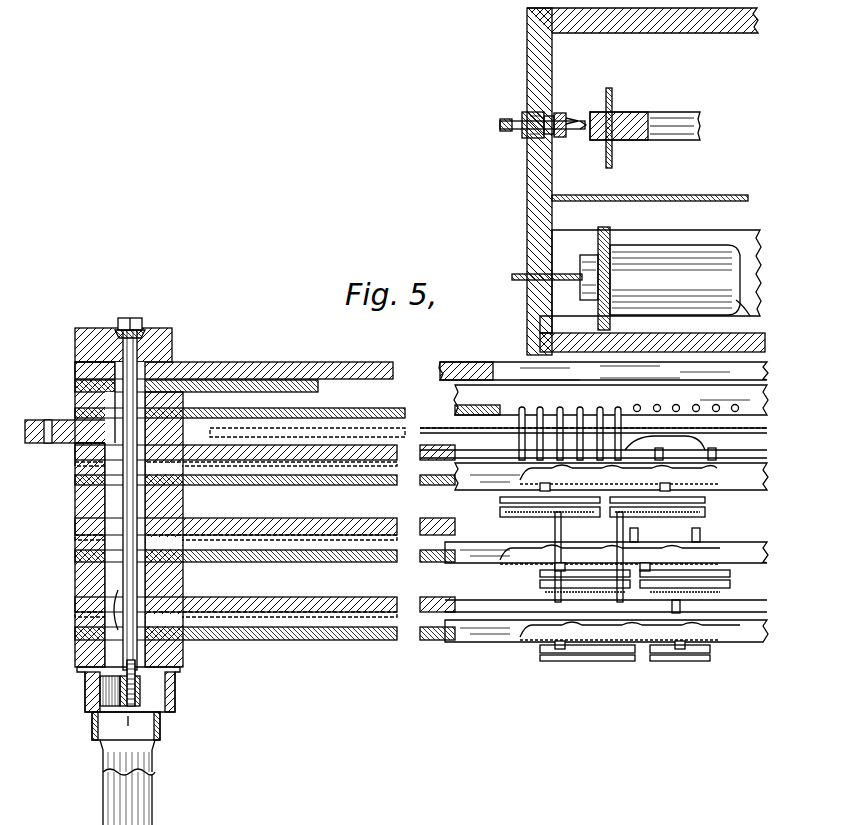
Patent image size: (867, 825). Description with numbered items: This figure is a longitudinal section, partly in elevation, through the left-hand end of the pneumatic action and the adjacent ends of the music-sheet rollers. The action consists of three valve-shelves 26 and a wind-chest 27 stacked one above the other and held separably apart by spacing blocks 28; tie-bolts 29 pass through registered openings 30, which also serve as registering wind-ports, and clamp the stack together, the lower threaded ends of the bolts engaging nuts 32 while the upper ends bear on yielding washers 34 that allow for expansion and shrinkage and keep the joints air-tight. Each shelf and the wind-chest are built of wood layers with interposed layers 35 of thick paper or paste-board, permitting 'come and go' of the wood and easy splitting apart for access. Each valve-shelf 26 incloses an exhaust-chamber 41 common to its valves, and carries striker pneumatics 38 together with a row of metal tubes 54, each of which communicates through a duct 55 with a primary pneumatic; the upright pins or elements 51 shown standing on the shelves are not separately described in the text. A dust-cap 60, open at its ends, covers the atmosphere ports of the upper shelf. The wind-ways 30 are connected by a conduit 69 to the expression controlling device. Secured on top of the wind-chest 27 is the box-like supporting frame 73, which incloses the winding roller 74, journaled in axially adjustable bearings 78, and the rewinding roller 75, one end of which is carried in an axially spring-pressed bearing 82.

The valve-shelves 26 is at (288, 454).
The wind-chest 27 is at (430, 366).
The spacing blocks 28 is at (74, 416).
The tie-bolts 29 is at (126, 497).
The registered openings 30 is at (116, 596).
The nuts 32 is at (113, 694).
The yielding washers 34 is at (137, 322).
The interposed layers 35 is at (330, 370).
The striker pneumatics 38 is at (696, 497).
The exhaust-chamber 41 is at (394, 462).
The pin 51 is at (616, 415).
The metal tubes 54 is at (718, 452).
The duct 55 is at (538, 488).
The dust-cap 60 is at (426, 400).
The conduit 69 is at (152, 804).
The supporting frame 73 is at (540, 68).
The winding roller 74 is at (665, 278).
The rewinding roller 75 is at (657, 118).
The axial adjustable bearings 78 is at (512, 282).
The axially spring-pressed bearing 82 is at (565, 124).